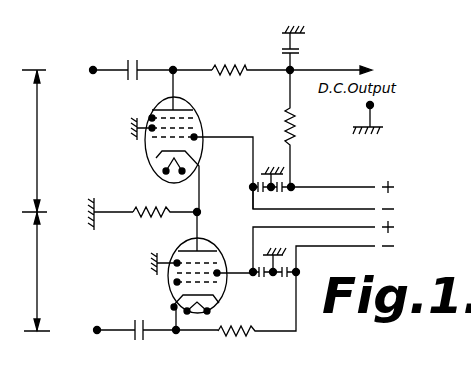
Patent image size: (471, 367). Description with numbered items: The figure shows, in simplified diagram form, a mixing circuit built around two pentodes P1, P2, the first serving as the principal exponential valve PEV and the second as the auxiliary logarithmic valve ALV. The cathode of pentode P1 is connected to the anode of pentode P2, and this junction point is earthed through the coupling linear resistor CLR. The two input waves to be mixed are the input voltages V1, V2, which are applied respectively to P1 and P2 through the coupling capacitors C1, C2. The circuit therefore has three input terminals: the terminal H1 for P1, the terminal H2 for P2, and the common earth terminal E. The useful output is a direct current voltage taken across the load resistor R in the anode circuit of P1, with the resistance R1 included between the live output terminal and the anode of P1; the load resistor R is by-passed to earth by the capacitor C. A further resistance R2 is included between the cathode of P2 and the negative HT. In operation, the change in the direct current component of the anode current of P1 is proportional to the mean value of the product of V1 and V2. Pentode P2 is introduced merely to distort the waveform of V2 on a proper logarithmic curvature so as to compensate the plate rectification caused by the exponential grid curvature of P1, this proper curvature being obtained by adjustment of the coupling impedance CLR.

The input voltage V1 is at (34, 141).
The input voltage V2 is at (37, 271).
The input terminal H1 is at (94, 73).
The coupling capacitor C1 is at (147, 61).
The resistance R1 is at (251, 60).
The capacitor C is at (301, 48).
The load resistor R is at (298, 128).
The principal exponential valve PEV is at (141, 141).
The pentode P1 is at (222, 157).
The common earth terminal E is at (94, 214).
The coupling linear resistor CLR is at (165, 202).
The auxiliary logarithmic valve ALV is at (165, 284).
The pentode P2 is at (233, 294).
The input terminal H2 is at (99, 334).
The coupling capacitor C2 is at (150, 342).
The resistance R2 is at (257, 317).